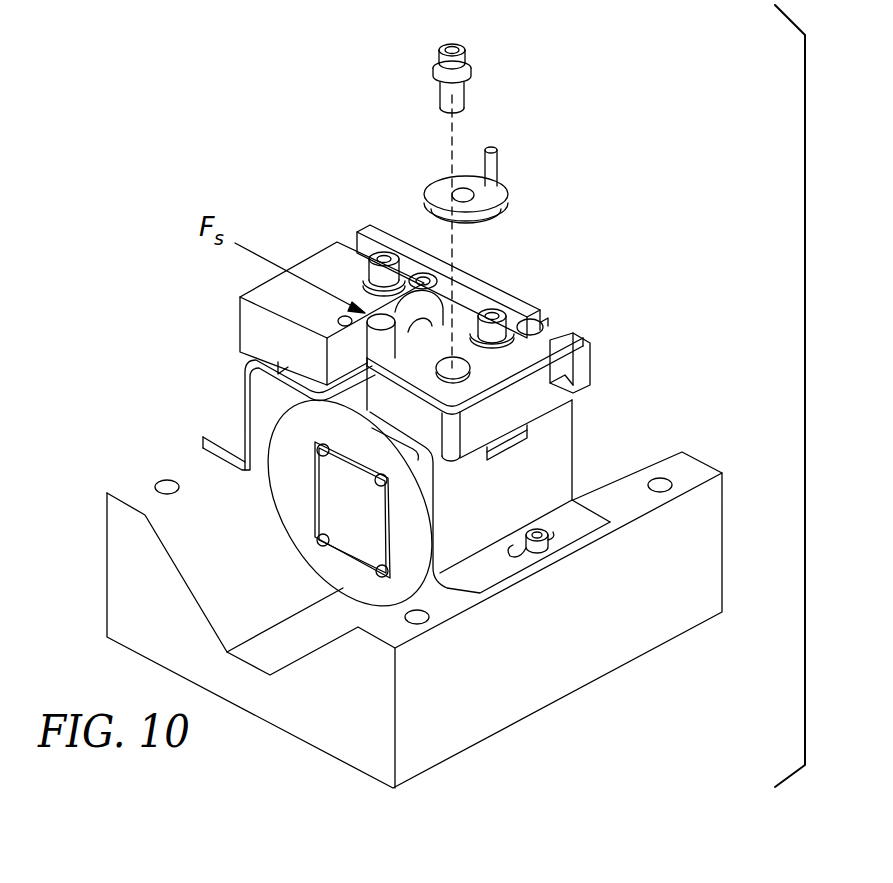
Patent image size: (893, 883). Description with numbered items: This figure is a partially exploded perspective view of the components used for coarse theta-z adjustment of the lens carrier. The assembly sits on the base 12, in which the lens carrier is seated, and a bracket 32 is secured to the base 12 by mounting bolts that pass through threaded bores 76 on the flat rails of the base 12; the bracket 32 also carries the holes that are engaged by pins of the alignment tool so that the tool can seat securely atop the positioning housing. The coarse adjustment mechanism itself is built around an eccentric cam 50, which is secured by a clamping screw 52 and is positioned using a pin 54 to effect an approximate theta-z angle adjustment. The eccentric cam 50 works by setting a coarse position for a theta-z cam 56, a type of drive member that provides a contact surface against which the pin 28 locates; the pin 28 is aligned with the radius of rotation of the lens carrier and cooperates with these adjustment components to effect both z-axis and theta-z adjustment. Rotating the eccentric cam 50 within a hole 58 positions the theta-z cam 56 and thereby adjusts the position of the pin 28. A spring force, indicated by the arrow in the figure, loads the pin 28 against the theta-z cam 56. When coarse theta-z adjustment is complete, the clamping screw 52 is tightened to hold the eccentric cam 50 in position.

The base 12 is at (622, 668).
The threaded bores 76 is at (168, 481).
The bracket 32 is at (248, 392).
The pin 28 is at (347, 336).
The theta-z cam 56 is at (458, 332).
The hole 58 is at (468, 362).
The clamping screw 52 is at (466, 44).
The pin 54 is at (500, 163).
The eccentric cam 50 is at (506, 194).